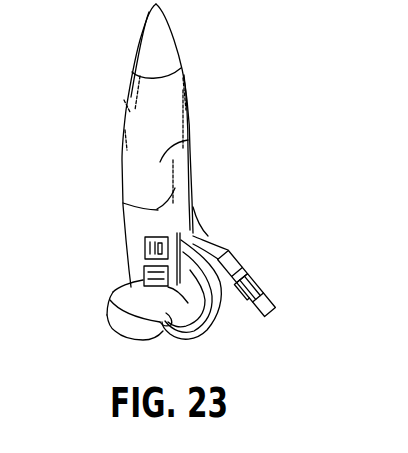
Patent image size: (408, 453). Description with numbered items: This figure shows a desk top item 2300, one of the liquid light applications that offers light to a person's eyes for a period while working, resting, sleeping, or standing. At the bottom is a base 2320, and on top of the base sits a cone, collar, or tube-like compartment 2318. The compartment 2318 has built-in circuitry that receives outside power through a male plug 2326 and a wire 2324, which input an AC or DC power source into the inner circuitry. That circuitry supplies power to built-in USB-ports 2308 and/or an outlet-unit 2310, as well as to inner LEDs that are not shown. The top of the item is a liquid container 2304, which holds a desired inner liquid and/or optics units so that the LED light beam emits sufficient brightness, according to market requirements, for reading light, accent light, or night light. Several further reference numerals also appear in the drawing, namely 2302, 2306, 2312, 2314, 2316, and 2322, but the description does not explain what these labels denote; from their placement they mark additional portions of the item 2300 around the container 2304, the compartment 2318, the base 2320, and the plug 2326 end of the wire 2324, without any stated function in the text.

The desk top item 2300 is at (102, 71).
The housing 2302 is at (217, 210).
The liquid container 2304 is at (190, 137).
The cap 2306 is at (202, 107).
The USB-port 2308 is at (143, 278).
The outlet-unit 2310 is at (145, 245).
The charging cradle 2312 is at (140, 294).
The body 2314 is at (169, 237).
The neck 2316 is at (193, 200).
The compartment 2318 is at (129, 221).
The base 2320 is at (127, 325).
The connector 2322 is at (286, 314).
The wire 2324 is at (224, 246).
The male plug 2326 is at (267, 279).